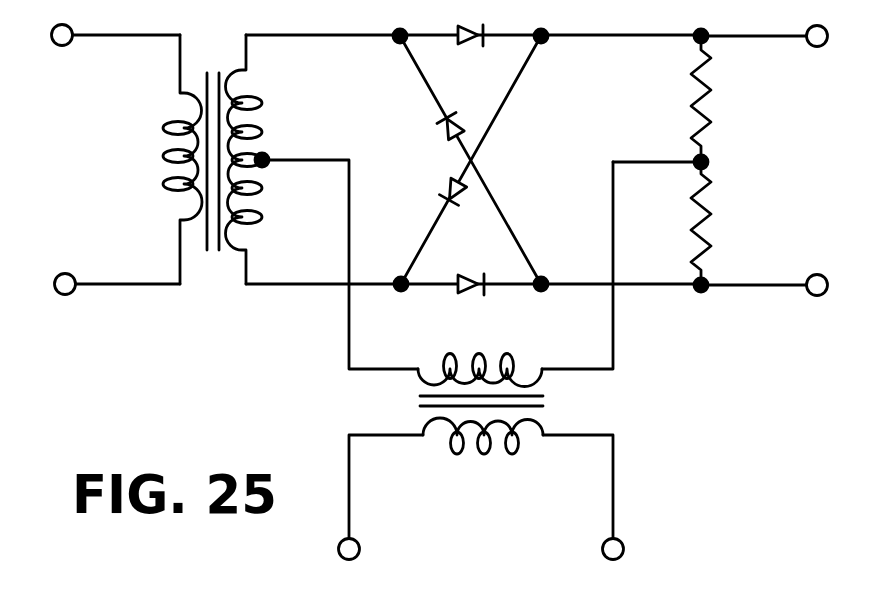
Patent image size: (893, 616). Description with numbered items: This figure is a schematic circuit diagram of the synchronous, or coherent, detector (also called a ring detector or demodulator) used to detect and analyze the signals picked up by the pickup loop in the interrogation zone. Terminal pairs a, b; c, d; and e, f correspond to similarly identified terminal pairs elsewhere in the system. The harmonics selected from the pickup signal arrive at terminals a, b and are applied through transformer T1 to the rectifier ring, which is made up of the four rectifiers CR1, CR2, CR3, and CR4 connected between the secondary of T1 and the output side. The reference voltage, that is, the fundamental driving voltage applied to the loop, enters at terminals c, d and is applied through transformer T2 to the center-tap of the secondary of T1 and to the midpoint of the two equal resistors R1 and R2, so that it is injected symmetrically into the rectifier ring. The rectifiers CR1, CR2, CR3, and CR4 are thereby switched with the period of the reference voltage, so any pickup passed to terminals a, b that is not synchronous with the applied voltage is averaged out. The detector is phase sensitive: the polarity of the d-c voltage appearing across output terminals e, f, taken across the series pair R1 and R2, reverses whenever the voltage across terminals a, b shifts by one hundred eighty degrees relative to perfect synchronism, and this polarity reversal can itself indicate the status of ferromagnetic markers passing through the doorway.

The input terminal a is at (99, 33).
The input terminal b is at (99, 281).
The reference voltage terminal c is at (349, 573).
The reference voltage terminal d is at (608, 577).
The output terminal e is at (785, 35).
The output terminal f is at (778, 287).
The transformer T1 is at (216, 179).
The transformer T2 is at (428, 404).
The rectifier CR1 is at (470, 53).
The rectifier CR2 is at (460, 160).
The rectifier CR3 is at (471, 268).
The rectifier CR4 is at (464, 160).
The resistor R1 is at (723, 102).
The resistor R2 is at (724, 223).